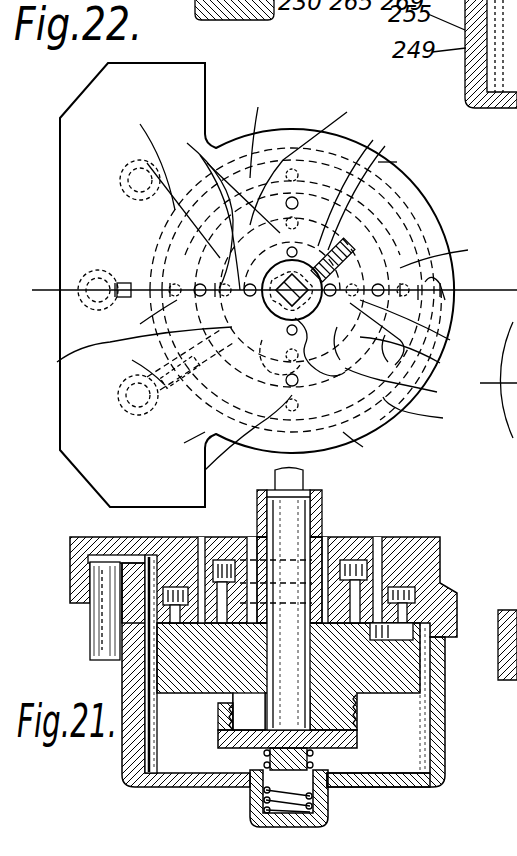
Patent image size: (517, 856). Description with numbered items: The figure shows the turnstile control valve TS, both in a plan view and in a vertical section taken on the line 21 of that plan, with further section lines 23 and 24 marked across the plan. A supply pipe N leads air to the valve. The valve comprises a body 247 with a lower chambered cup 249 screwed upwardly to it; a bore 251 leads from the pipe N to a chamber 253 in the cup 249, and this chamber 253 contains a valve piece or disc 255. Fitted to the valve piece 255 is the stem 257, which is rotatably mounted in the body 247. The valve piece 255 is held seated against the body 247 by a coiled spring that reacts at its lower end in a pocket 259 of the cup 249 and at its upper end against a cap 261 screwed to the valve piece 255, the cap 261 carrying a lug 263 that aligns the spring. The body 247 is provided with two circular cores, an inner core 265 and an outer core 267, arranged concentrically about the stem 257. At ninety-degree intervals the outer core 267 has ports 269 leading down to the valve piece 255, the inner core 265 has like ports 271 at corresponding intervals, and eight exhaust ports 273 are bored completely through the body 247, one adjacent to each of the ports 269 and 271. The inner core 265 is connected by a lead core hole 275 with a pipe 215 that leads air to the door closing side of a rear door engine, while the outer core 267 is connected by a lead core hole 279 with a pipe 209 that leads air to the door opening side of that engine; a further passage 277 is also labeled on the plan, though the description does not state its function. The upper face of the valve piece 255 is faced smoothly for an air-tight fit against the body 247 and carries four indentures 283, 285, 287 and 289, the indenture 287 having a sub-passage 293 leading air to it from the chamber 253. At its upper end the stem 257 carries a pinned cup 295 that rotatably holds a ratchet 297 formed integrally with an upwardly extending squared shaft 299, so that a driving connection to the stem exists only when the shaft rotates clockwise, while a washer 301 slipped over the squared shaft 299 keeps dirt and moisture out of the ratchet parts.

In FIG. 22, the section line 21 is at (473, 280).
In FIG. 22, the section line 23 is at (431, 175).
In FIG. 22, the section line 24 is at (105, 145).
In FIG. 22, the supply pipe N is at (78, 327).
In FIG. 21, the supply pipe N is at (90, 630).
In FIG. 22, the turnstile control valve TS is at (304, 121).
In FIG. 21, the turnstile control valve TS is at (402, 531).
In FIG. 22, the pipe 209 is at (120, 183).
In FIG. 22, the pipe 215 is at (118, 395).
In FIG. 22, the body 247 is at (88, 228).
In FIG. 21, the body 247 is at (420, 556).
In FIG. 21, the lower chambered cup 249 is at (446, 740).
In FIG. 22, the bore 251 is at (106, 249).
In FIG. 21, the bore 251 is at (85, 562).
In FIG. 21, the chamber 253 is at (140, 748).
In FIG. 21, the valve piece 255 is at (392, 665).
In FIG. 21, the stem 257 is at (310, 695).
In FIG. 21, the pocket 259 is at (320, 812).
In FIG. 21, the cap 261 is at (172, 787).
In FIG. 21, the lug 263 is at (310, 768).
In FIG. 22, the inner core 265 is at (213, 257).
In FIG. 21, the inner core 265 is at (258, 535).
In FIG. 22, the outer core 267 is at (260, 130).
In FIG. 21, the outer core 267 is at (200, 580).
In FIG. 22, the ports 269 is at (296, 278).
In FIG. 21, the ports 269 is at (175, 613).
In FIG. 22, the ports 271 is at (316, 252).
In FIG. 21, the ports 271 is at (226, 612).
In FIG. 22, the exhaust ports 273 is at (338, 307).
In FIG. 21, the exhaust ports 273 is at (222, 560).
In FIG. 22, the lead core hole 275 is at (126, 365).
In FIG. 22, the passage 277 is at (171, 419).
In FIG. 22, the lead core hole 279 is at (140, 154).
In FIG. 22, the indenture 283 is at (121, 352).
In FIG. 22, the indenture 285 is at (169, 446).
In FIG. 22, the indenture 287 is at (415, 388).
In FIG. 22, the indenture 289 is at (420, 270).
In FIG. 21, the indenture 289 is at (435, 620).
In FIG. 22, the sub-passage 293 is at (438, 416).
In FIG. 22, the cup 295 is at (410, 164).
In FIG. 21, the cup 295 is at (325, 537).
In FIG. 22, the ratchet 297 is at (312, 302).
In FIG. 21, the ratchet 297 is at (275, 490).
In FIG. 22, the squared shaft 299 is at (307, 363).
In FIG. 22, the washer 301 is at (280, 268).